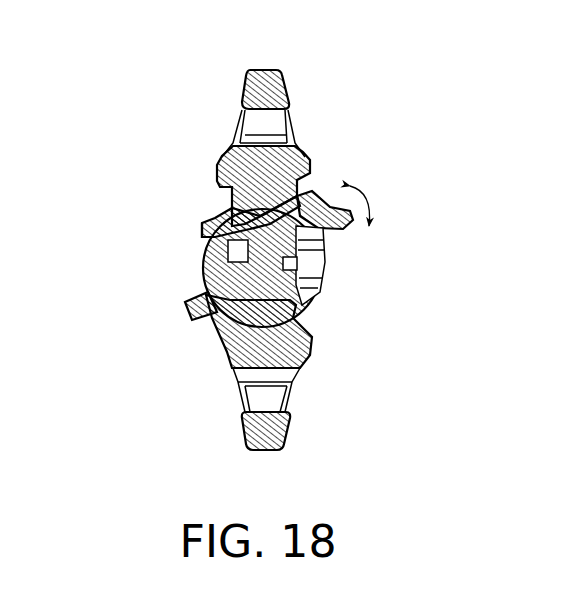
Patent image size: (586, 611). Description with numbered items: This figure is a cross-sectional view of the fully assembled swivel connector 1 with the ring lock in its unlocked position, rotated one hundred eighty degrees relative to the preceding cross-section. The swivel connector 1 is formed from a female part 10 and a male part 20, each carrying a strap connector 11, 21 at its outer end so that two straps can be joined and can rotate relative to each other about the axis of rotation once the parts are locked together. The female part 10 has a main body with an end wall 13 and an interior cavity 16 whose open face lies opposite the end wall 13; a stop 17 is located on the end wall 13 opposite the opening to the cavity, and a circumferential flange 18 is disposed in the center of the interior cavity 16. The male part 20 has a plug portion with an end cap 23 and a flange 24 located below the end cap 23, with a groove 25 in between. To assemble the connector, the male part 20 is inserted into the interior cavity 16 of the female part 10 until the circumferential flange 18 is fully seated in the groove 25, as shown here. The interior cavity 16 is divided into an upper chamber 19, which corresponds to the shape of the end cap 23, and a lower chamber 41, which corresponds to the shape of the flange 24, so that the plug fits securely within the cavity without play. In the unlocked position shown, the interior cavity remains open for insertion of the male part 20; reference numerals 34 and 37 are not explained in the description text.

The swivel connector 1 is at (220, 244).
The female part 10 is at (269, 123).
The strap connector 11 is at (273, 84).
The end wall 13 is at (203, 263).
The interior cavity 16 is at (374, 307).
The stop 17 is at (202, 230).
The circumferential flange 18 is at (207, 262).
The upper chamber 19 is at (311, 212).
The male part 20 is at (258, 344).
The strap connector 21 is at (290, 435).
The end cap 23 is at (252, 227).
The flange 24 is at (215, 317).
The groove 25 is at (322, 268).
The lever 34 is at (314, 196).
The pivot direction 37 is at (372, 193).
The lower chamber 41 is at (210, 310).